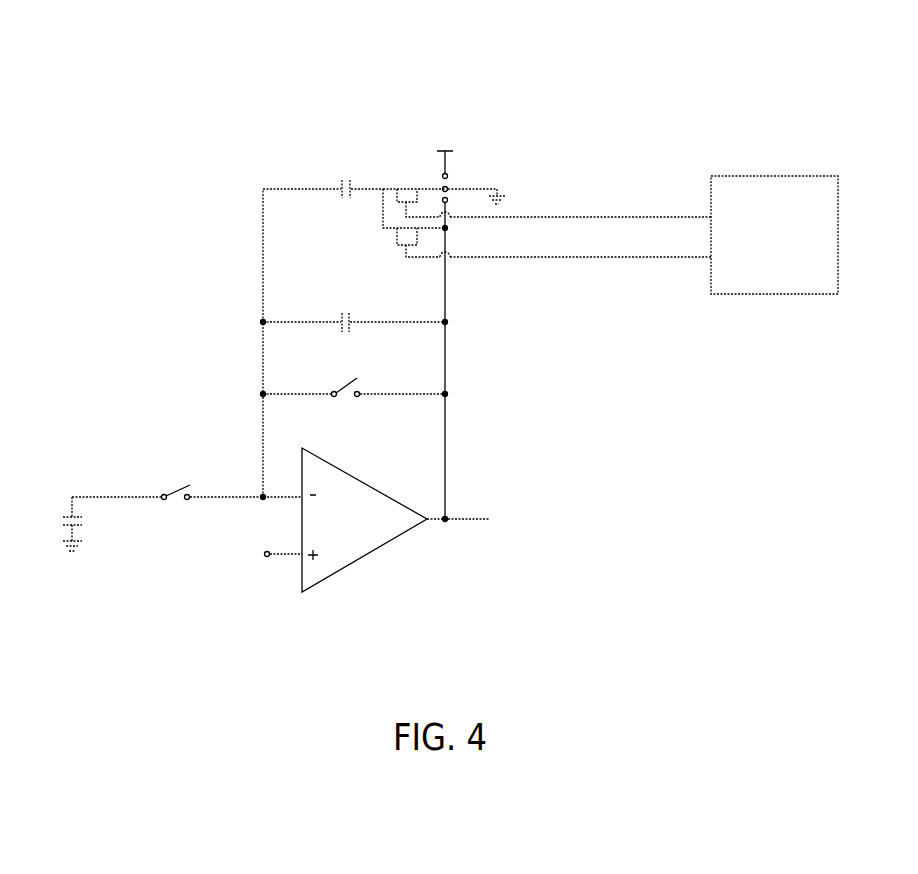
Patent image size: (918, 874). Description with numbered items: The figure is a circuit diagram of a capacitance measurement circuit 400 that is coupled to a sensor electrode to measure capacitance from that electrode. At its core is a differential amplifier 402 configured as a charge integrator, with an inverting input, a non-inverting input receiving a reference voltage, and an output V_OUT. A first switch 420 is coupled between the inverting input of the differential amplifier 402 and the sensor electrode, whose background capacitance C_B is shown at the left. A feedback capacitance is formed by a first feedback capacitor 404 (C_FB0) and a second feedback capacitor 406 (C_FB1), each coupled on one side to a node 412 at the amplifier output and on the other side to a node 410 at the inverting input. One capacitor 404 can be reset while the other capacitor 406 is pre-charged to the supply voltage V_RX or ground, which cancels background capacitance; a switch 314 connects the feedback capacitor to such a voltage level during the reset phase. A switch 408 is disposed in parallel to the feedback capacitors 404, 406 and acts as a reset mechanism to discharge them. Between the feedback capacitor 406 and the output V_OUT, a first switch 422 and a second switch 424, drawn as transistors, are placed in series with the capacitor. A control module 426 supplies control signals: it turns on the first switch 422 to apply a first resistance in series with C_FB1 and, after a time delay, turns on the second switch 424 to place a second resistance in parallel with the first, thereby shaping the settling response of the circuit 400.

The capacitance measurement circuit 400 is at (150, 67).
The differential amplifier 402 is at (362, 558).
The first feedback capacitor 404 is at (340, 312).
The second feedback capacitor 406 is at (328, 178).
The switch 408 is at (340, 380).
The node 410 is at (272, 180).
The node 412 is at (382, 175).
The first switch 420 is at (182, 483).
The first switch 422 is at (418, 198).
The second switch 424 is at (422, 245).
The control module 426 is at (792, 267).
The switch 314 is at (462, 173).